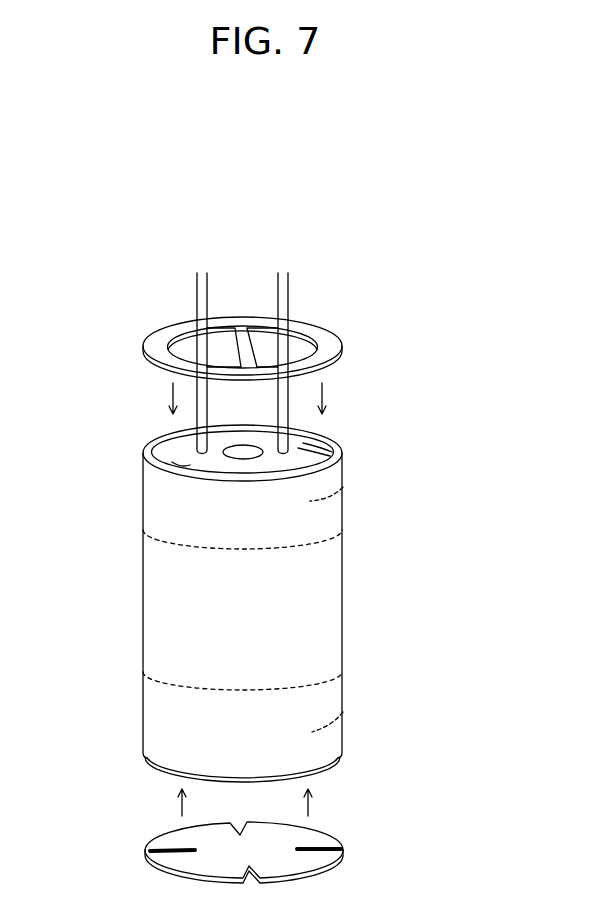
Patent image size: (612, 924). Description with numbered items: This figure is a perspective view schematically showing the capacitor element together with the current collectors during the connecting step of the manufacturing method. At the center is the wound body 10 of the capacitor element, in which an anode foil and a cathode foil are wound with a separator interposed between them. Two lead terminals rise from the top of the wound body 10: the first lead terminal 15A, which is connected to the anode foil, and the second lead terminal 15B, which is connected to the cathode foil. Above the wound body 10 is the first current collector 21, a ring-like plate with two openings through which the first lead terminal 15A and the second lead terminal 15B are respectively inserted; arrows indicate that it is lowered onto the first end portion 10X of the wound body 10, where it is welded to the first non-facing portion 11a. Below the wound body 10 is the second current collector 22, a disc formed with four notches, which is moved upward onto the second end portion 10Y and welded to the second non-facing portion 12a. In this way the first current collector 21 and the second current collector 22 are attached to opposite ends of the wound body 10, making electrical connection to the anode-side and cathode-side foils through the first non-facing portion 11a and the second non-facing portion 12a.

The first lead terminal 15A is at (197, 306).
The second lead terminal 15B is at (289, 302).
The first current collector 21 is at (318, 340).
The first end portion 10X is at (359, 425).
The second end portion 10Y is at (138, 789).
The wound body 10 is at (244, 599).
The first non-facing portion 11a is at (343, 487).
The second non-facing portion 12a is at (343, 712).
The second current collector 22 is at (320, 836).